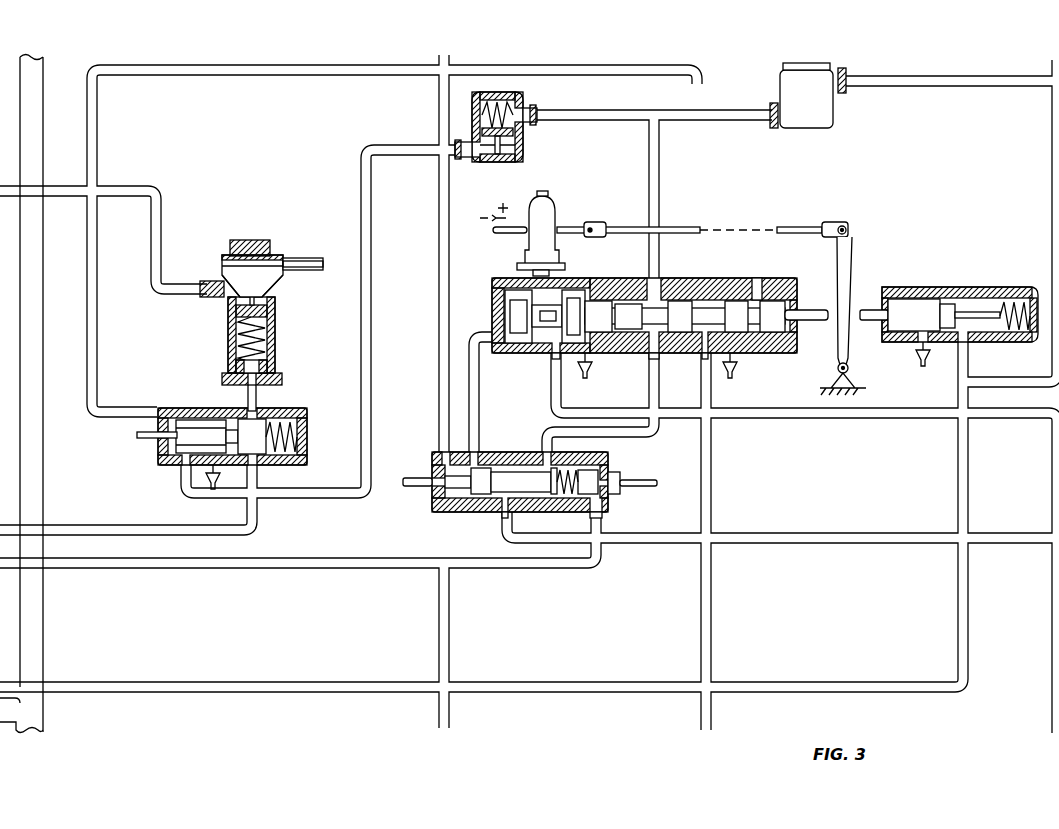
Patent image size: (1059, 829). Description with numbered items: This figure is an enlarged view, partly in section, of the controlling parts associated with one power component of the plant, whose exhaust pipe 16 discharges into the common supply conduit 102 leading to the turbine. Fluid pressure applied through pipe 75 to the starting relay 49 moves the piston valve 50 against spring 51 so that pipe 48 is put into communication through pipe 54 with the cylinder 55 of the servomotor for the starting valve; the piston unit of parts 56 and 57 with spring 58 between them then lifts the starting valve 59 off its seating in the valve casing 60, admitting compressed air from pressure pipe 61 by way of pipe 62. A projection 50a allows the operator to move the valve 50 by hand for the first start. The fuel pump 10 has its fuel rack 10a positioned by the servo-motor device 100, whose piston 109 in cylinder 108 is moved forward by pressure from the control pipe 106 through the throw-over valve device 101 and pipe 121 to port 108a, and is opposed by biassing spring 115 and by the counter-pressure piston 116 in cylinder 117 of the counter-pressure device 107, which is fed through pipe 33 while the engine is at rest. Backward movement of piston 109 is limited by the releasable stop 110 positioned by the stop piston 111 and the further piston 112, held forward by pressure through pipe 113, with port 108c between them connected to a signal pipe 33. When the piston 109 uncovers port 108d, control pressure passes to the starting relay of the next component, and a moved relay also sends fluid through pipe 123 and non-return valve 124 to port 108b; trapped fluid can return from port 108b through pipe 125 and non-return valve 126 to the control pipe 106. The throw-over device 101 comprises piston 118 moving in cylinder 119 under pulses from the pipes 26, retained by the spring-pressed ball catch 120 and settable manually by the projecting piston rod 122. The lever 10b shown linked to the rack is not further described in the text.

The fuel injection pump 10 is at (550, 224).
The fuel rack 10a is at (651, 217).
The lever 10b is at (832, 296).
The exhaust pipe 16 is at (43, 715).
The pipe 26 is at (298, 391).
The signal pipe 33 is at (528, 396).
The pipe 48 is at (150, 505).
The starting relay 49 is at (250, 448).
The piston valve 50 is at (221, 418).
The projection 50a is at (147, 455).
The spring 51 is at (302, 452).
The pipe 54 is at (282, 396).
The cylinder 55 is at (269, 341).
The piston part 56 is at (228, 357).
The piston part 57 is at (276, 303).
The spring 58 is at (277, 339).
The starting valve 59 is at (297, 283).
The valve casing 60 is at (239, 268).
The pressure pipe 61 is at (317, 255).
The pipe 62 is at (103, 240).
The pipe 75 is at (422, 400).
The servo-motor device 100 is at (644, 311).
The throw-over valve device 101 is at (520, 469).
The common supply conduit 102 is at (59, 394).
The control pipe 106 is at (783, 328).
The counter-pressure device 107 is at (960, 310).
The cylinder 108 is at (775, 272).
The port 108a is at (673, 377).
The port 108b is at (628, 197).
The port 108c is at (583, 377).
The port 108d is at (729, 377).
The piston 109 is at (794, 341).
The releasable stop 110 is at (685, 341).
The stop piston 111 is at (569, 293).
The further piston 112 is at (505, 293).
The pipe 113 is at (495, 394).
The biassing spring 115 is at (1019, 337).
The counter-pressure piston 116 is at (900, 293).
The cylinder 117 is at (960, 291).
The piston 118 is at (523, 517).
The cylinder 119 is at (548, 472).
The spring-pressed ball catch 120 is at (577, 501).
The pipe 121 is at (589, 402).
The piston rod 122 is at (540, 493).
The pipe 123 is at (306, 323).
The non-return valve 124 is at (462, 127).
The pipe 125 is at (647, 100).
The non-return valve 126 is at (830, 96).